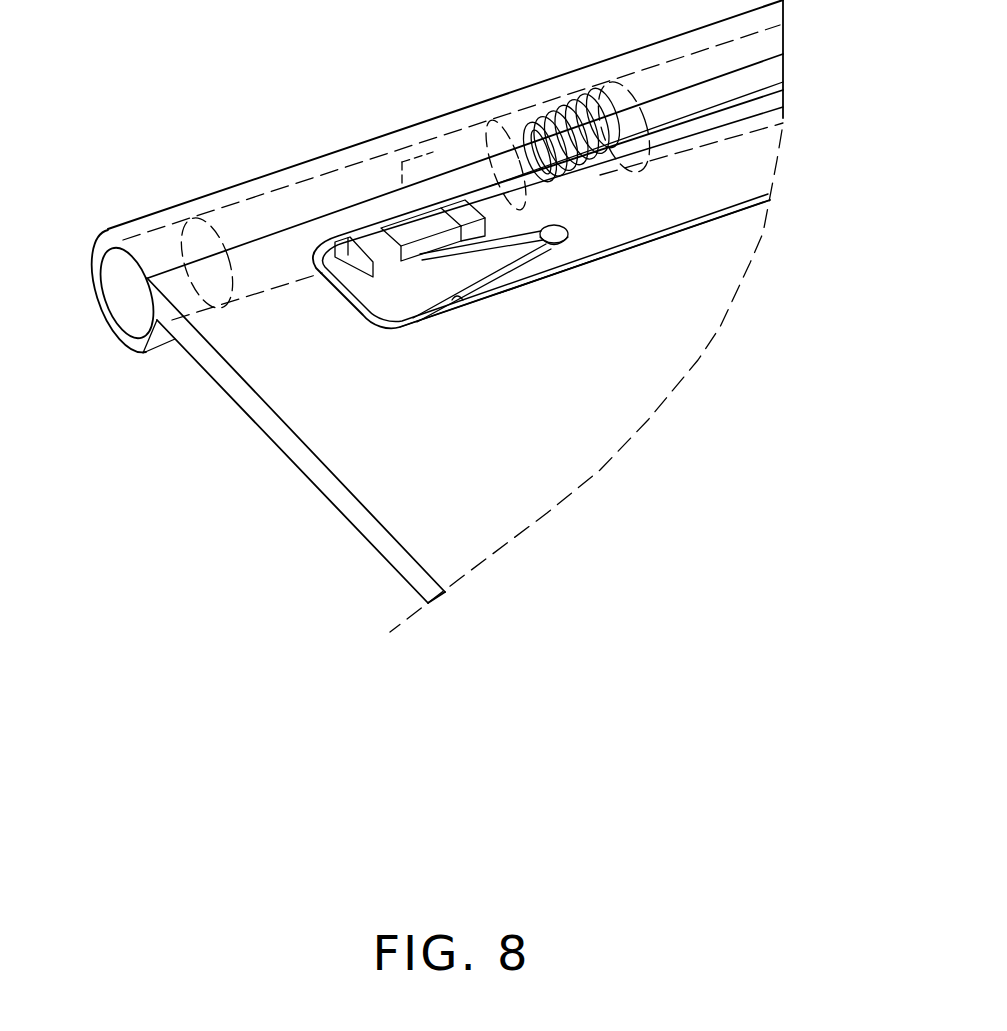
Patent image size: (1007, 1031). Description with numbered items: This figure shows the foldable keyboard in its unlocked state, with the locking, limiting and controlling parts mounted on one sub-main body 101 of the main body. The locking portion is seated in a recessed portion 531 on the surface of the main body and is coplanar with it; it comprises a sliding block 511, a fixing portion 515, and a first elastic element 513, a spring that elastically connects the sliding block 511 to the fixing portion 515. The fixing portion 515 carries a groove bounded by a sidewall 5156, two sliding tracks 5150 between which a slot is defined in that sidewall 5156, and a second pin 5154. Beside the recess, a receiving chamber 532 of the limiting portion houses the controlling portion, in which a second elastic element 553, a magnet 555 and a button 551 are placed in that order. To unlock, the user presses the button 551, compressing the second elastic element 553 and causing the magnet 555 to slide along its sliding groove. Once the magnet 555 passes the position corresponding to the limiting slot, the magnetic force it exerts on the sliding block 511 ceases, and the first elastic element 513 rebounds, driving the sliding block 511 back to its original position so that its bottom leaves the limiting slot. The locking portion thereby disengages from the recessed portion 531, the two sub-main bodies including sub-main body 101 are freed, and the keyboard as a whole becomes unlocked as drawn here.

The sub-main body 101 is at (248, 360).
The sliding block 511 is at (417, 237).
The first elastic element 513 is at (548, 278).
The fixing portion 515 is at (723, 188).
The sliding tracks 5150 is at (378, 268).
The second pin 5154 is at (563, 232).
The sidewall 5156 is at (707, 227).
The recessed portion 531 is at (355, 312).
The receiving chamber 532 is at (125, 295).
The button 551 is at (277, 212).
The second elastic element 553 is at (573, 110).
The magnet 555 is at (458, 157).